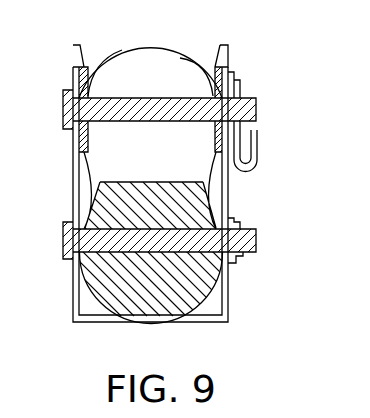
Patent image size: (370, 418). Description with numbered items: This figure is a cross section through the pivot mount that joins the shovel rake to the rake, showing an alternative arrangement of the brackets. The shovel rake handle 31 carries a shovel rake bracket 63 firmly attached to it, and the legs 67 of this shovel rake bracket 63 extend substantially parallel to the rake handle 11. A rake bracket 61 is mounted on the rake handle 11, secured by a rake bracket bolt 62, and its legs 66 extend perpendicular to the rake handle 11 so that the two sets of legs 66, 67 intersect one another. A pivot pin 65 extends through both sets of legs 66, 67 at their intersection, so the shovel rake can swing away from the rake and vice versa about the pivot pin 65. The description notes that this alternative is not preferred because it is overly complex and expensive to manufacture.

The rake handle 11 is at (163, 219).
The shovel rake handle 31 is at (160, 89).
The rake bracket 61 is at (228, 322).
The rake bracket bolt 62 is at (256, 236).
The shovel rake bracket 63 is at (230, 56).
The pivot pin 65 is at (246, 108).
The leg of rake bracket 66 is at (73, 203).
The leg of shovel rake bracket 67 is at (121, 51).